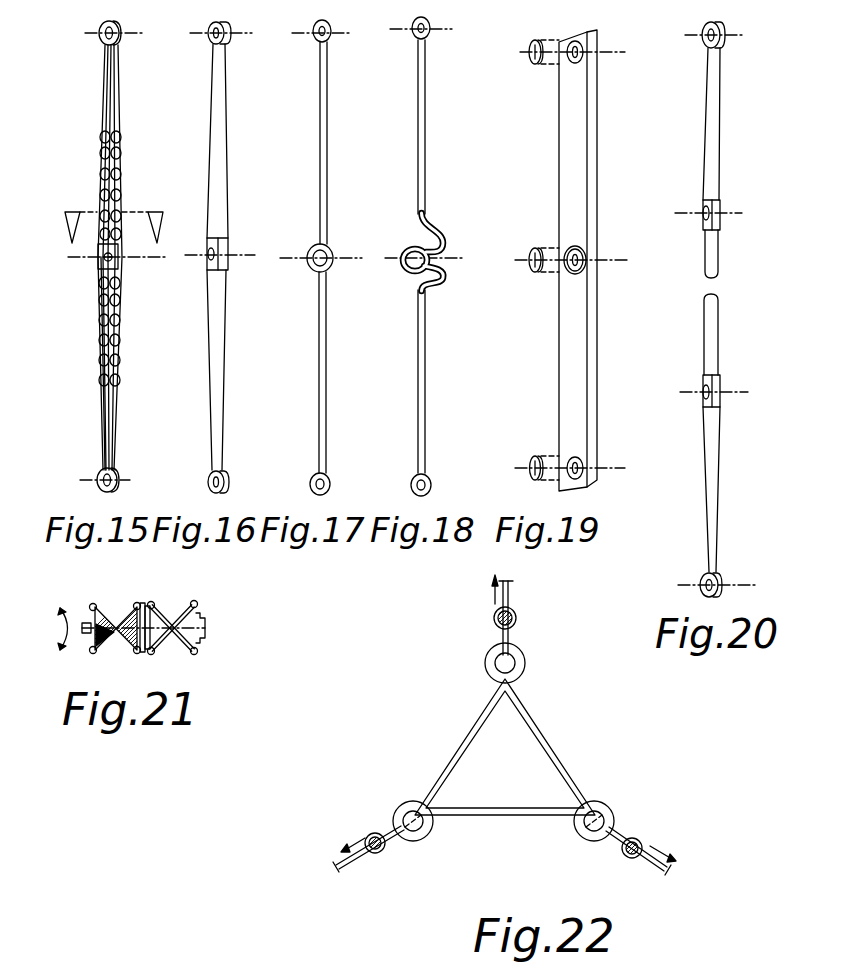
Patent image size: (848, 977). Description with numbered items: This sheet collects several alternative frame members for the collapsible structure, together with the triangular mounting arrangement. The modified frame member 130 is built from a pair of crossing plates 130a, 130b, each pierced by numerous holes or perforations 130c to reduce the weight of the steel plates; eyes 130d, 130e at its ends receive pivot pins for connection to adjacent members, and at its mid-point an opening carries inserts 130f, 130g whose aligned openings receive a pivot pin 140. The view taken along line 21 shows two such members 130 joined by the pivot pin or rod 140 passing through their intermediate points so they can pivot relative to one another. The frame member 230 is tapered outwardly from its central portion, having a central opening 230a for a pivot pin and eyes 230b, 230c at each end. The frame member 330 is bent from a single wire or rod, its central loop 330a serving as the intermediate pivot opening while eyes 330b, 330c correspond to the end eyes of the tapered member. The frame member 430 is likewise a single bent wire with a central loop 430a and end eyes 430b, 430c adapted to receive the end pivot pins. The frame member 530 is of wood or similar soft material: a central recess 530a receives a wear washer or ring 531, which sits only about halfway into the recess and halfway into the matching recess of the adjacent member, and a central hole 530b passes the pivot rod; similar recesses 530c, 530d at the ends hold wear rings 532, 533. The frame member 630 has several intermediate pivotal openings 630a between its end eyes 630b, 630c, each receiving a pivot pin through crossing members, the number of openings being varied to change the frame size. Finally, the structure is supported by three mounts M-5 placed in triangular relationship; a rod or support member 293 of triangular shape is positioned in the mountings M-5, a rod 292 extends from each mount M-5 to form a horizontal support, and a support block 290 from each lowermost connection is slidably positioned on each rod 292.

In FIG. 15, the modified frame member 130 is at (123, 160).
In FIG. 21, the modified frame member 130 is at (160, 612).
In FIG. 15, the crossing plate 130a is at (121, 405).
In FIG. 21, the crossing plate 130a is at (143, 603).
In FIG. 15, the crossing plate 130b is at (106, 408).
In FIG. 21, the crossing plate 130b is at (105, 603).
In FIG. 15, the holes or perforations 130c is at (121, 330).
In FIG. 15, the eye 130d is at (120, 24).
In FIG. 15, the eye 130e is at (118, 472).
In FIG. 21, the insert 130f is at (87, 618).
In FIG. 21, the insert 130g is at (106, 645).
In FIG. 21, the pivot pin or rod 140 is at (82, 636).
In FIG. 15, the section line 21 is at (109, 215).
In FIG. 16, the modified frame member 230 is at (222, 172).
In FIG. 16, the opening 230a is at (206, 264).
In FIG. 16, the eye 230b is at (227, 20).
In FIG. 16, the eye 230c is at (227, 474).
In FIG. 17, the modified frame member 330 is at (328, 178).
In FIG. 17, the central opening or loop 330a is at (308, 268).
In FIG. 17, the eye 330b is at (330, 22).
In FIG. 17, the eye 330c is at (328, 476).
In FIG. 18, the modified frame member 430 is at (426, 185).
In FIG. 18, the central opening or loop 430a is at (405, 275).
In FIG. 18, the eye 430b is at (428, 18).
In FIG. 18, the eye 430c is at (430, 476).
In FIG. 19, the frame member 530 is at (590, 185).
In FIG. 19, the central recess 530a is at (582, 266).
In FIG. 19, the central hole 530b is at (583, 272).
In FIG. 19, the recess 530c is at (581, 60).
In FIG. 19, the recess 530d is at (582, 464).
In FIG. 19, the wear washer or ring 531 is at (537, 274).
In FIG. 19, the wear ring 532 is at (537, 66).
In FIG. 19, the wear ring 533 is at (533, 456).
In FIG. 20, the frame member 630 is at (716, 172).
In FIG. 20, the intermediate pivotal openings 630a is at (702, 222).
In FIG. 20, the eye 630b is at (722, 20).
In FIG. 20, the eye 630c is at (720, 575).
In FIG. 22, the support block 290 is at (517, 614).
In FIG. 22, the rod 292 is at (512, 604).
In FIG. 22, the rod or support member 293 is at (492, 818).
In FIG. 22, the mount M-5 is at (516, 652).